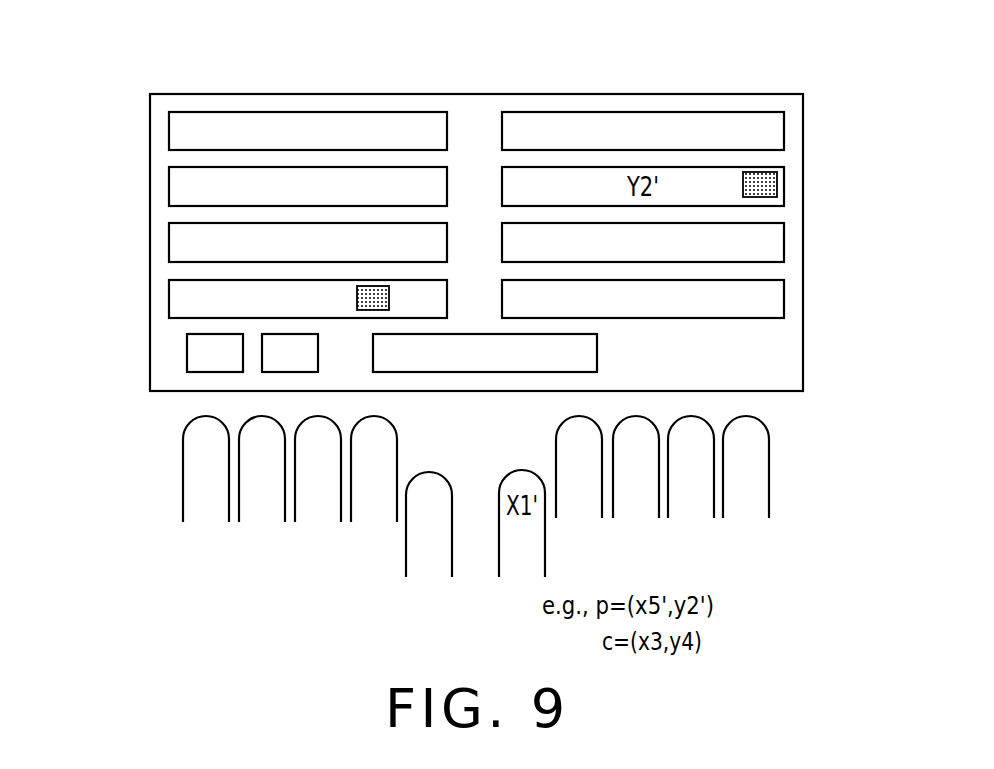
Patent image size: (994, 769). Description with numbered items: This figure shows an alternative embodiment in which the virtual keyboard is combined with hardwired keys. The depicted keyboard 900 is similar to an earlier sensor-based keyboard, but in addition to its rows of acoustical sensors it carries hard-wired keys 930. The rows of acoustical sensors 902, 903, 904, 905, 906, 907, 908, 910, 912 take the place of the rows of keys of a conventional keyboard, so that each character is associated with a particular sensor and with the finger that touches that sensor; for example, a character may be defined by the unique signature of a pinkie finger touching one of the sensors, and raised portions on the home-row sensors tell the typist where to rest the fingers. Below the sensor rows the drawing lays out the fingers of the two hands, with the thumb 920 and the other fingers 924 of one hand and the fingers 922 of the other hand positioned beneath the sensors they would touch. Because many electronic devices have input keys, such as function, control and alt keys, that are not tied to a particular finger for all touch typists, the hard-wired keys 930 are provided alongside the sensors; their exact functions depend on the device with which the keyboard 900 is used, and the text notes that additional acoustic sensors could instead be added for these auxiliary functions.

The keyboard 900 is at (730, 84).
The sensor 902 is at (785, 123).
The sensor 903 is at (785, 183).
The sensor 904 is at (785, 241).
The sensor 905 is at (785, 299).
The sensor 906 is at (543, 373).
The sensor 907 is at (168, 294).
The sensor 908 is at (168, 241).
The sensor 910 is at (168, 188).
The sensor 912 is at (168, 125).
The left thumb X1 920 is at (408, 552).
The right hand fingers 922 is at (770, 455).
The left hand fingers 924 is at (372, 510).
The hard-wired keys 930 is at (252, 353).